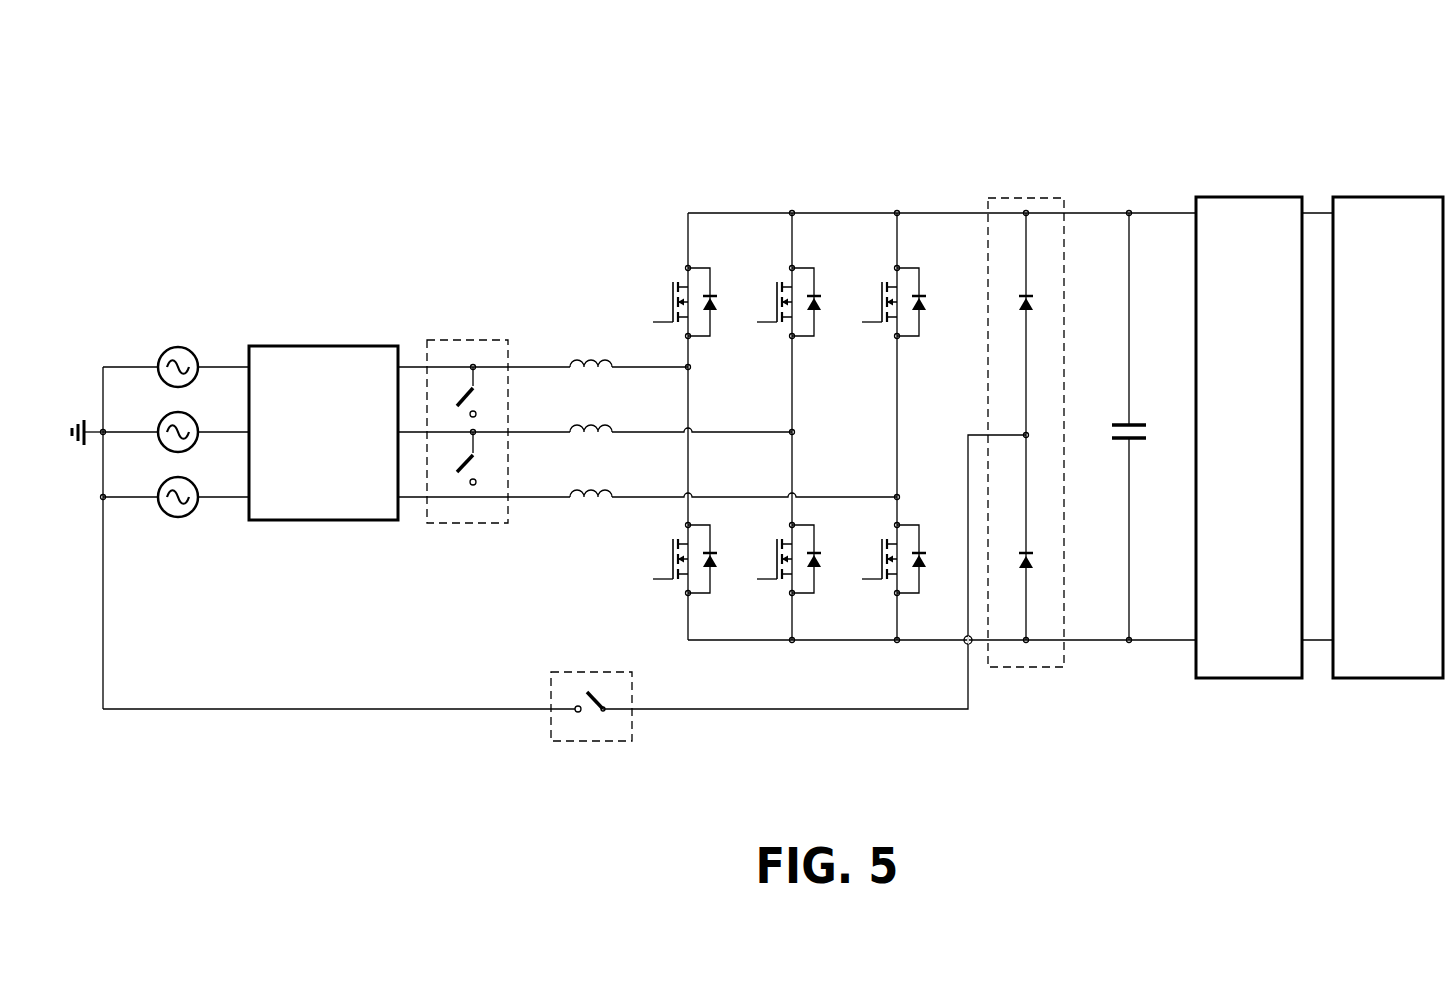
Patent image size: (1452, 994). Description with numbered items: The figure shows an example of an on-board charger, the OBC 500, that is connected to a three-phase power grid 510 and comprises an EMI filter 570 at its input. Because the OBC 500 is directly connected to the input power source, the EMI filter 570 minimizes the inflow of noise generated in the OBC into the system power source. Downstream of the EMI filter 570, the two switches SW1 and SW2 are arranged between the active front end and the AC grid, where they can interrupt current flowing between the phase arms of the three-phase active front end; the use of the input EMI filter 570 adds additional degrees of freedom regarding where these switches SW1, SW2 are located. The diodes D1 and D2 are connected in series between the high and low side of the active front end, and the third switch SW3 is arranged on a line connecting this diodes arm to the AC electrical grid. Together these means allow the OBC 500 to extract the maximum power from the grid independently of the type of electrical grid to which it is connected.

The OBC 500 is at (525, 210).
The three-phase power grid 510 is at (170, 340).
The EMI filter 570 is at (330, 345).
The switch SW1 is at (458, 392).
The switch SW2 is at (456, 486).
The switch SW3 is at (592, 718).
The diode D1 is at (1011, 306).
The diode D2 is at (1040, 567).